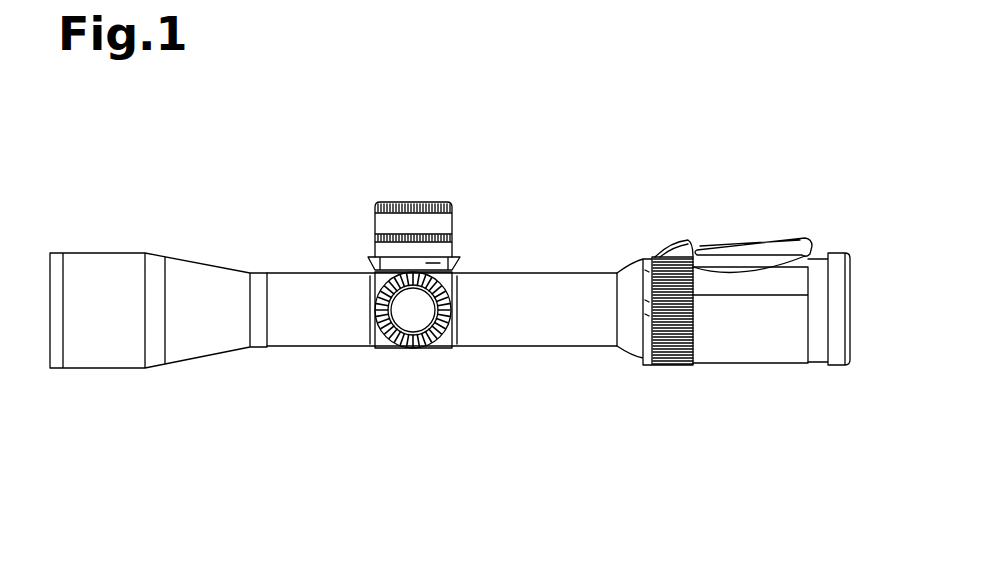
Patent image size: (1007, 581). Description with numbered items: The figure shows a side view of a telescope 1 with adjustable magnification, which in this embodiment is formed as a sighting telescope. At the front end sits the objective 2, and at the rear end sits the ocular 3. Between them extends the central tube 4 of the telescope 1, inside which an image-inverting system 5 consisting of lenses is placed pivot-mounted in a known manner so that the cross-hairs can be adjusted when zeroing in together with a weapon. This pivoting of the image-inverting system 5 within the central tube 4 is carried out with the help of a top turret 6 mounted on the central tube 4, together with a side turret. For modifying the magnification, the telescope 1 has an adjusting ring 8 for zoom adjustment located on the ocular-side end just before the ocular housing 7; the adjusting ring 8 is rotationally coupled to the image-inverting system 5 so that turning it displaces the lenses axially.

The telescope 1 is at (255, 143).
The objective 2 is at (48, 284).
The ocular 3 is at (855, 284).
The central tube 4 is at (513, 360).
The image-inverting system 5 is at (413, 310).
The top turret 6 is at (441, 184).
The ocular housing 7 is at (752, 377).
The adjusting ring 8 is at (661, 233).